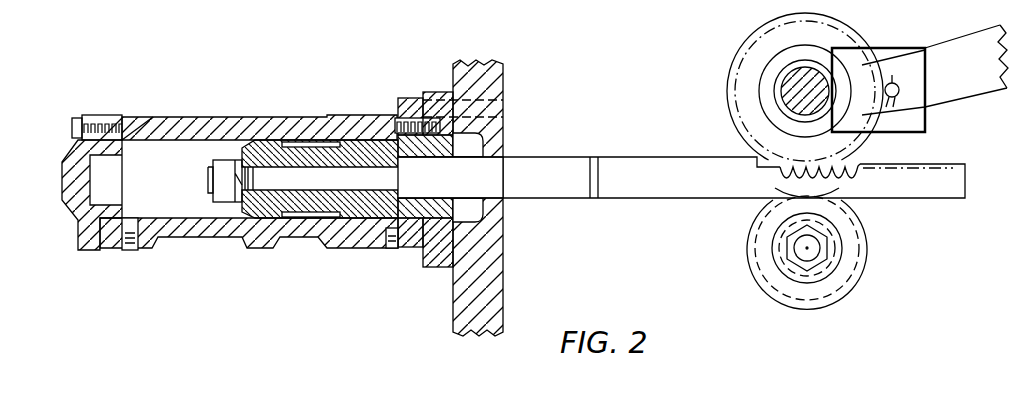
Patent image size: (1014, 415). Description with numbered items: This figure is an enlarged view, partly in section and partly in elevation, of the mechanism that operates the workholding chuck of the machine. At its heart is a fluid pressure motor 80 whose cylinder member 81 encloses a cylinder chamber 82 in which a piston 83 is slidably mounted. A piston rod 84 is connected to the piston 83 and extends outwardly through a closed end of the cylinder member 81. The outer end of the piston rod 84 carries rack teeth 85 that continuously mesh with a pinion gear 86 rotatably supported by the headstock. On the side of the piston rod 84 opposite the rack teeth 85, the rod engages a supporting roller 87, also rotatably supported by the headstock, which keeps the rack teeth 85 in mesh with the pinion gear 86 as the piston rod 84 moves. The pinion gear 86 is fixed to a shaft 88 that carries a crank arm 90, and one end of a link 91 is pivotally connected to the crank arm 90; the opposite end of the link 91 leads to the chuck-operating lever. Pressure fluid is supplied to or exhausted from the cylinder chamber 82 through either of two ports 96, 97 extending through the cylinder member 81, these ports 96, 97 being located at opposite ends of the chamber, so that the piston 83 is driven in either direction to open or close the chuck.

The fluid pressure motor 80 is at (248, 103).
The cylinder member 81 is at (215, 232).
The cylinder chamber 82 is at (188, 106).
The piston 83 is at (345, 248).
The piston rod 84 is at (545, 163).
The rack teeth 85 is at (860, 163).
The pinion gear 86 is at (745, 70).
The supporting roller 87 is at (860, 250).
The shaft 88 is at (795, 98).
The crank arm 90 is at (925, 125).
The link 91 is at (973, 43).
The port 96 is at (122, 250).
The port 97 is at (388, 248).